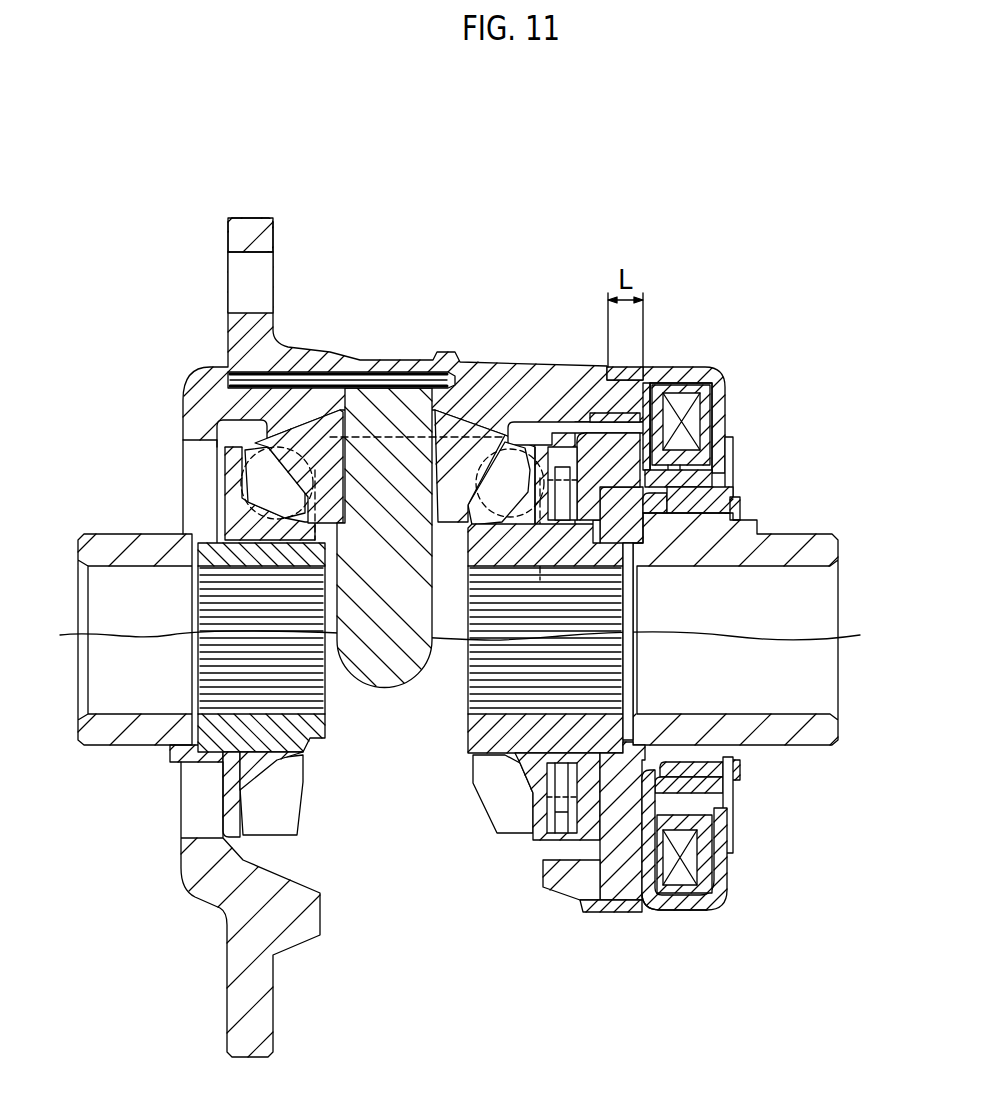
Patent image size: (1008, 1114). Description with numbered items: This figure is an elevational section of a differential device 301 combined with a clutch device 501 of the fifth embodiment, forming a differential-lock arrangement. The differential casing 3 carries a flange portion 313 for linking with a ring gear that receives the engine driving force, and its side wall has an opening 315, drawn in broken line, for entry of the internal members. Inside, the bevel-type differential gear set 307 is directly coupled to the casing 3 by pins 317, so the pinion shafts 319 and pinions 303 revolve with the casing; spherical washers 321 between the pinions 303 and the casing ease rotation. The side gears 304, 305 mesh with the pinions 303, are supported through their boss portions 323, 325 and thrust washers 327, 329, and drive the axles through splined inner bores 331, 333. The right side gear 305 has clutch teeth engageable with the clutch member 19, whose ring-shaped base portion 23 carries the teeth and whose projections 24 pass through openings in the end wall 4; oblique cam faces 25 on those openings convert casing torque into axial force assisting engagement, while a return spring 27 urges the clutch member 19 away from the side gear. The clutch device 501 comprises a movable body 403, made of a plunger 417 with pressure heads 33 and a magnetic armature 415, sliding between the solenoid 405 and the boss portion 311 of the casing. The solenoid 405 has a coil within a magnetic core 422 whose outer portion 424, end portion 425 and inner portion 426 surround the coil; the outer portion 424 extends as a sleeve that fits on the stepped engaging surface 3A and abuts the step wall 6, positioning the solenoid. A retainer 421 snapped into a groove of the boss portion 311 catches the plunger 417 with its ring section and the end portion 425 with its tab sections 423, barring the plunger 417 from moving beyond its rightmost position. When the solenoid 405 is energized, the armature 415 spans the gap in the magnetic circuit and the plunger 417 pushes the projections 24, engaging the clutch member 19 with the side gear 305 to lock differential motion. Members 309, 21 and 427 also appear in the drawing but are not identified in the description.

The differential device 301 is at (418, 178).
The clutch device 501 is at (522, 275).
The flange portion 313 is at (252, 224).
The differential casing 3 is at (302, 335).
The pins 317 is at (406, 356).
The pinion shafts 319 is at (372, 398).
The spherical washers 321 is at (475, 405).
The cam faces 25 is at (613, 418).
The clutch member 19 is at (610, 367).
The yoke plate 427 is at (630, 377).
The engaging surface 3A is at (648, 362).
The pinions 303 is at (307, 460).
The projections 24 is at (648, 433).
The tab sections 423 is at (733, 437).
The retainer 421 is at (735, 467).
The inner portion 426 is at (683, 470).
The pressure heads 33 is at (733, 507).
The boss portion 311 is at (812, 542).
The input shaft 309 is at (120, 537).
The boss portion 323 is at (170, 533).
The opening 315 is at (392, 538).
The boss portion 325 is at (633, 560).
The splined inner bore 333 is at (632, 660).
The splined inner bore 331 is at (318, 693).
The movable body 403 is at (700, 752).
The thrust washer 327 is at (303, 757).
The side gear 304 is at (280, 807).
The thrust washer 329 is at (507, 753).
The side gear 305 is at (490, 803).
The return spring 27 is at (530, 793).
The cam member 21 is at (563, 840).
The base portion 23 is at (587, 823).
The end wall 4 is at (620, 853).
The step wall 6 is at (610, 912).
The outer portion 424 is at (658, 913).
The magnetic core 422 is at (717, 910).
The solenoid 405 is at (710, 875).
The end portion 425 is at (727, 853).
The armature 415 is at (700, 803).
The plunger 417 is at (740, 777).
The differential gear set 307 is at (395, 890).